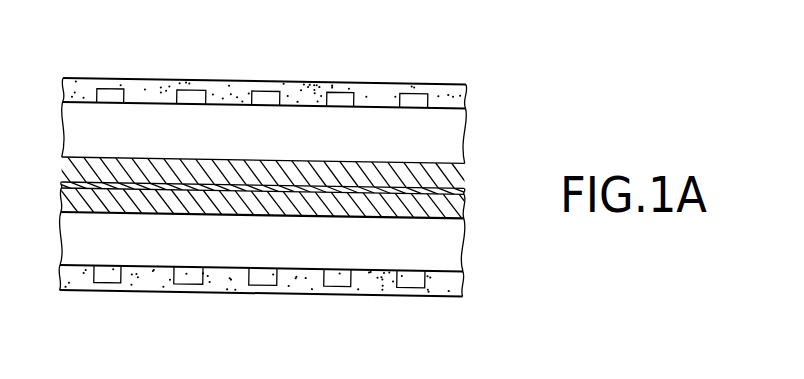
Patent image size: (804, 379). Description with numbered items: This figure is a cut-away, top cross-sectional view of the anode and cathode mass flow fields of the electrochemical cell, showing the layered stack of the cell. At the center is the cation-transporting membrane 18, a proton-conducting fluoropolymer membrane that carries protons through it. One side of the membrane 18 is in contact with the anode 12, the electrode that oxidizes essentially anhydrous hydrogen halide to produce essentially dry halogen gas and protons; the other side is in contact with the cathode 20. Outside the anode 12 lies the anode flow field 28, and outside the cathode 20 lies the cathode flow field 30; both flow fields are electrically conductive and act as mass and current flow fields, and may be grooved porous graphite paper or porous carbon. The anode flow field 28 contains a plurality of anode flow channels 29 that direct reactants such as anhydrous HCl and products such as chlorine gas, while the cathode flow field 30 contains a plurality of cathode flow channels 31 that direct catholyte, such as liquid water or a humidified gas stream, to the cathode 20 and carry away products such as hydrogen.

The anode 12 is at (97, 165).
The cation-transporting membrane 18 is at (465, 192).
The cathode 20 is at (95, 213).
The anode flow field 28 is at (198, 80).
The anode flow channels 29 is at (115, 88).
The cathode flow field 30 is at (197, 290).
The cathode flow channels 31 is at (113, 283).